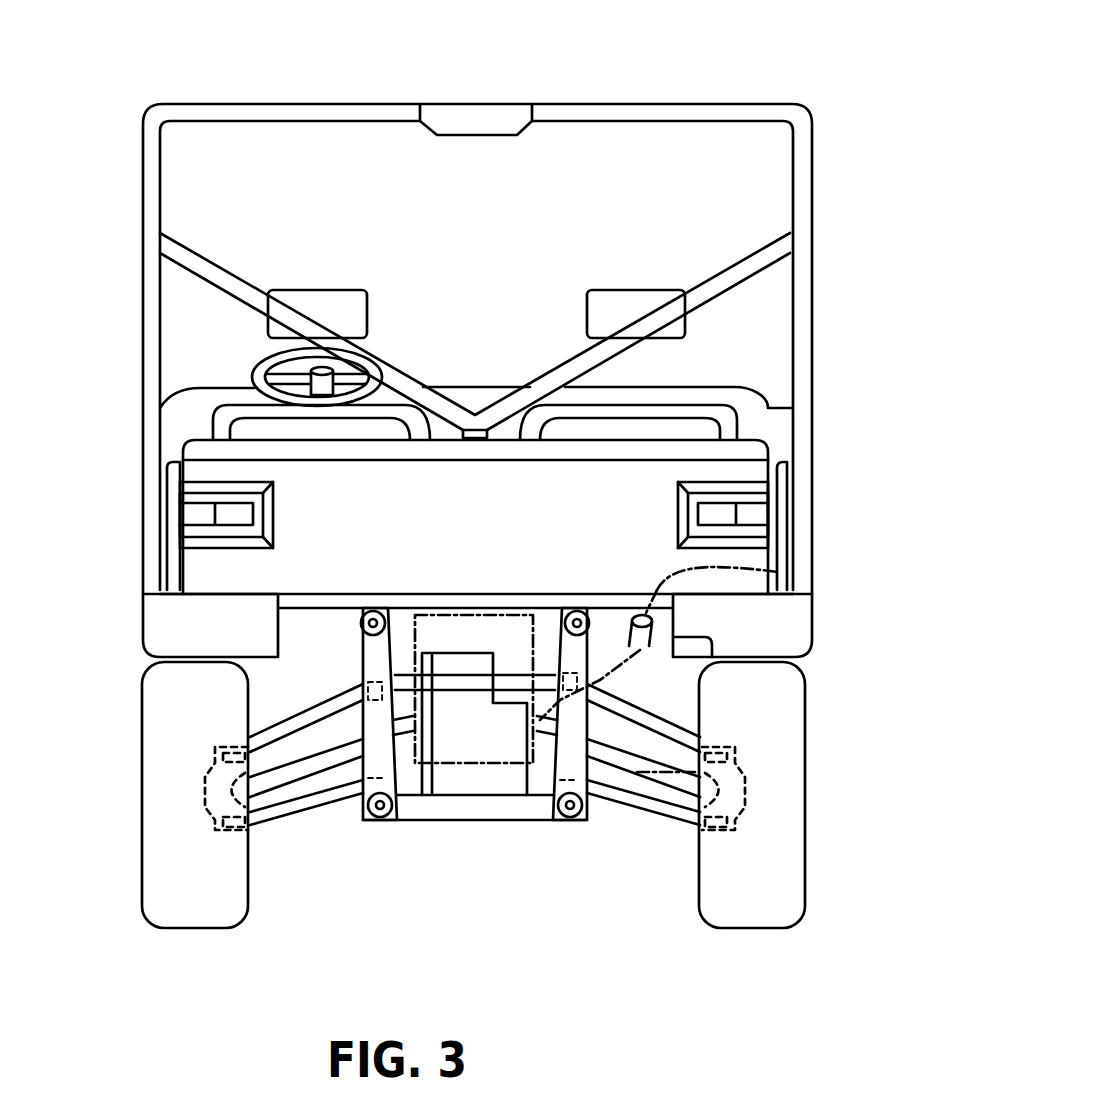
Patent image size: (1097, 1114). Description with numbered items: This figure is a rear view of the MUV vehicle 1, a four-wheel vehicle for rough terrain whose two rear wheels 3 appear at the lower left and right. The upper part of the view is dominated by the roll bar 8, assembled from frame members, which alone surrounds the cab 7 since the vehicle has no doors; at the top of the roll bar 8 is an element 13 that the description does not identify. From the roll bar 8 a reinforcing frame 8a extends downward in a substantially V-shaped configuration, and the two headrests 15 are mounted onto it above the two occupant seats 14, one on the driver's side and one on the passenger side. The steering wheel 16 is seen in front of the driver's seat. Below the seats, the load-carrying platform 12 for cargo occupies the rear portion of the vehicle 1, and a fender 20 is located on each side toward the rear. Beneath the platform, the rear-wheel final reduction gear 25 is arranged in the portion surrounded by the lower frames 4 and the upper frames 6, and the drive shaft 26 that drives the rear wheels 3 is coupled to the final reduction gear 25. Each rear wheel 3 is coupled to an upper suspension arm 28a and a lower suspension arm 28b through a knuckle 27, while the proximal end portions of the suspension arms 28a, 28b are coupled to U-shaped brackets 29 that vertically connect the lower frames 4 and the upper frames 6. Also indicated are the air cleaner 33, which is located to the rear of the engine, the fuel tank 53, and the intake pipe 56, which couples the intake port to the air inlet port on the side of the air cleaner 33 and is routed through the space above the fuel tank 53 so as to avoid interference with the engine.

The MUV vehicle 1 is at (873, 82).
The rear wheel 3 is at (193, 929).
The lower frame 4 is at (378, 821).
The upper frame 6 is at (362, 632).
The cab 7 is at (486, 231).
The roll bar 8 is at (812, 196).
The reinforcing frame 8a is at (208, 264).
The load-carrying platform 12 is at (748, 495).
The roll bar top notch 13 is at (528, 123).
The occupant seat 14 is at (213, 426).
The headrest 15 is at (318, 290).
The steering wheel 16 is at (263, 366).
The fender 20 is at (143, 625).
The rear-wheel final reduction gear 25 is at (473, 797).
The drive shaft 26 is at (297, 773).
The knuckle 27 is at (205, 792).
The upper suspension arm 28a is at (283, 724).
The lower suspension arm 28b is at (268, 815).
The U-shaped bracket 29 is at (400, 821).
The air cleaner 33 is at (455, 765).
The fuel tank 53 is at (680, 703).
The intake pipe 56 is at (778, 572).